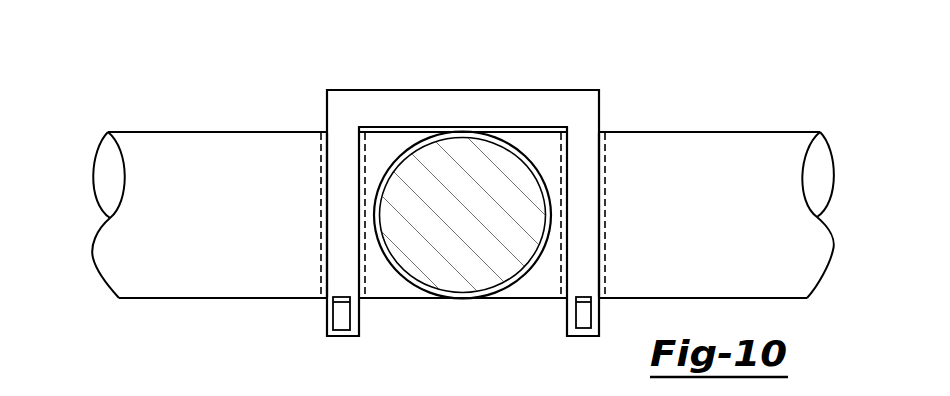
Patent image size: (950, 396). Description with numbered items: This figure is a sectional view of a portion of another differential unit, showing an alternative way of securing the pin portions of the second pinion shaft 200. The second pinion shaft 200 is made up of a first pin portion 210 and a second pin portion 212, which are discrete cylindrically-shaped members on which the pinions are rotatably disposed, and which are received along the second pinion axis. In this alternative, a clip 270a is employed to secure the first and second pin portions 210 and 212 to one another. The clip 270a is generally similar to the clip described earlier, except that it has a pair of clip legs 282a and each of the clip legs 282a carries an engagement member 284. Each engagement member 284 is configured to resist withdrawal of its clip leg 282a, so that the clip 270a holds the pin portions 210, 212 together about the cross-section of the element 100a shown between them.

The clip 270a is at (630, 83).
The second pinion shaft 200 is at (766, 148).
The first pin portion 210 is at (807, 255).
The second pin portion 212 is at (120, 255).
The clip legs 282a is at (345, 175).
The engagement member 284 is at (344, 323).
The cable 100a is at (461, 284).